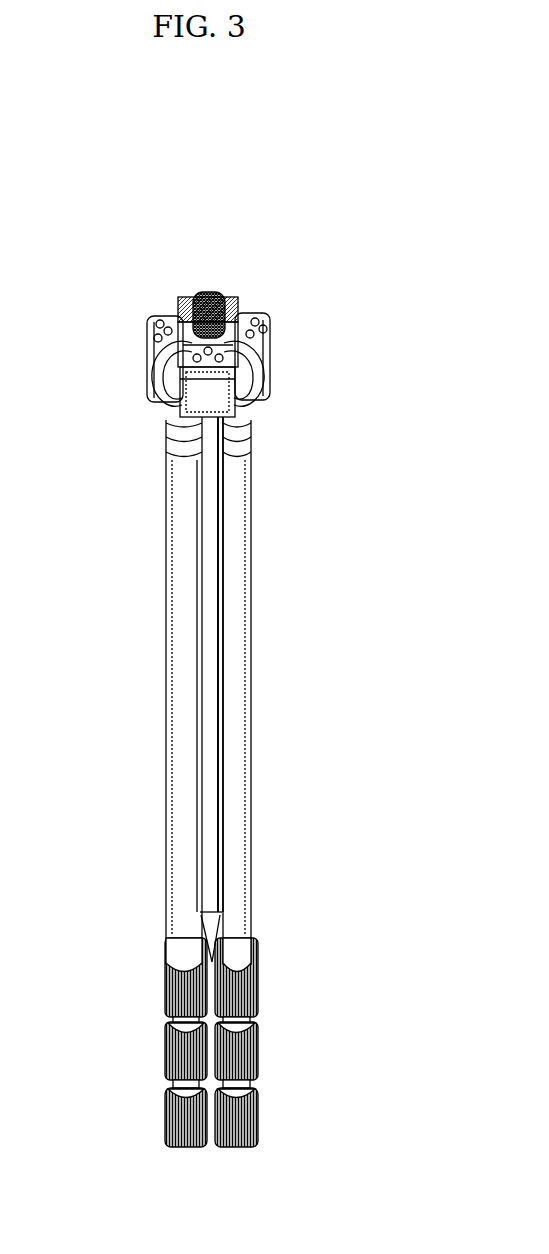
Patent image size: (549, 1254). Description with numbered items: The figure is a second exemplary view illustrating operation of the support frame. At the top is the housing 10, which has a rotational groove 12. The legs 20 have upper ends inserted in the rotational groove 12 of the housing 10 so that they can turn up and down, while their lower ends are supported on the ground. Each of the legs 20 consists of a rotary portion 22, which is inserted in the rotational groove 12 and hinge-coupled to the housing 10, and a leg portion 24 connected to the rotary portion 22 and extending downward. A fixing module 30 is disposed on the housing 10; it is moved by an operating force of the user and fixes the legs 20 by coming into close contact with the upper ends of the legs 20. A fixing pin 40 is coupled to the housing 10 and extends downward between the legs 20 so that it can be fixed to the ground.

The housing 10 is at (148, 326).
The rotational groove 12 is at (152, 355).
The legs 20 is at (167, 775).
The rotary portion 22 is at (156, 386).
The leg portion 24 is at (176, 672).
The fixing module 30 is at (220, 293).
The fixing pin 40 is at (212, 877).